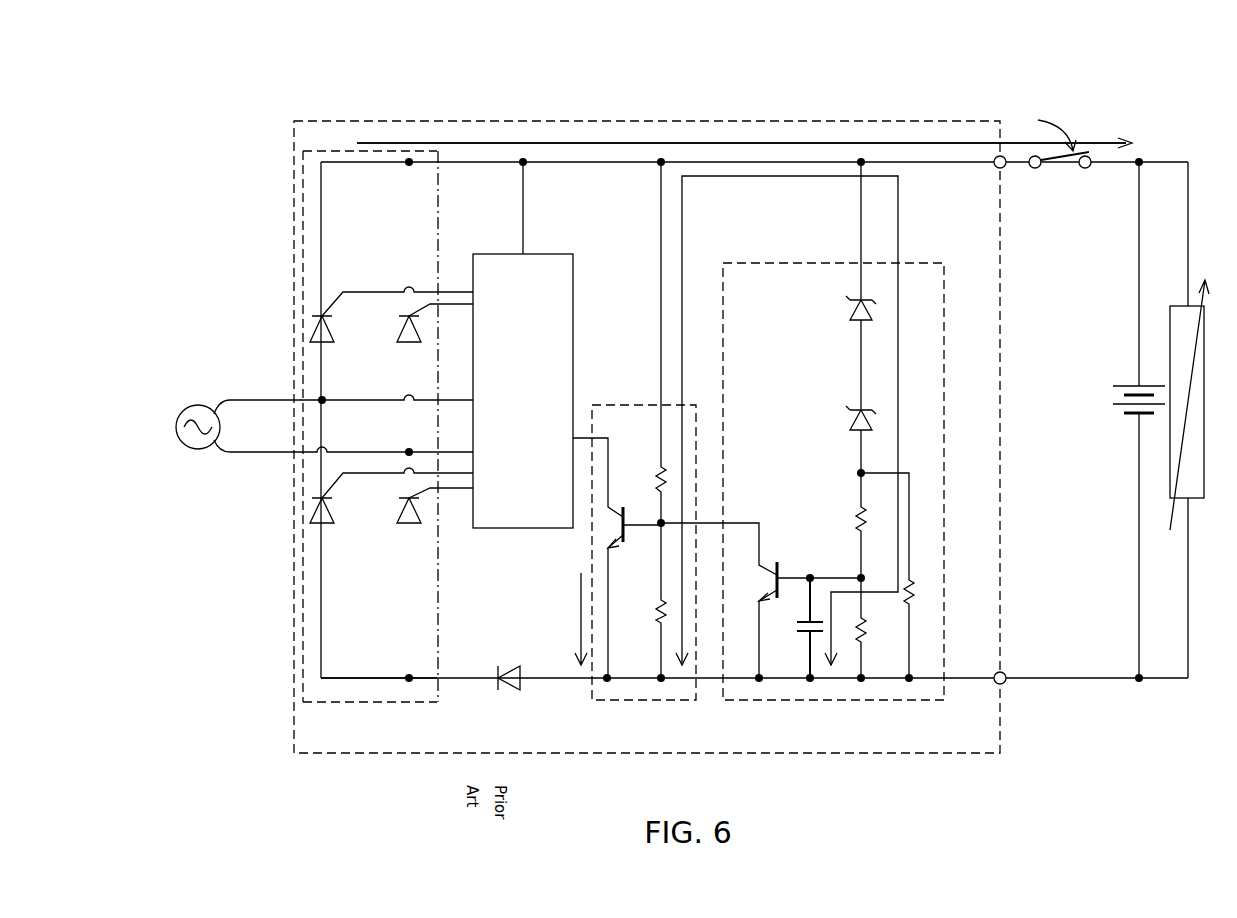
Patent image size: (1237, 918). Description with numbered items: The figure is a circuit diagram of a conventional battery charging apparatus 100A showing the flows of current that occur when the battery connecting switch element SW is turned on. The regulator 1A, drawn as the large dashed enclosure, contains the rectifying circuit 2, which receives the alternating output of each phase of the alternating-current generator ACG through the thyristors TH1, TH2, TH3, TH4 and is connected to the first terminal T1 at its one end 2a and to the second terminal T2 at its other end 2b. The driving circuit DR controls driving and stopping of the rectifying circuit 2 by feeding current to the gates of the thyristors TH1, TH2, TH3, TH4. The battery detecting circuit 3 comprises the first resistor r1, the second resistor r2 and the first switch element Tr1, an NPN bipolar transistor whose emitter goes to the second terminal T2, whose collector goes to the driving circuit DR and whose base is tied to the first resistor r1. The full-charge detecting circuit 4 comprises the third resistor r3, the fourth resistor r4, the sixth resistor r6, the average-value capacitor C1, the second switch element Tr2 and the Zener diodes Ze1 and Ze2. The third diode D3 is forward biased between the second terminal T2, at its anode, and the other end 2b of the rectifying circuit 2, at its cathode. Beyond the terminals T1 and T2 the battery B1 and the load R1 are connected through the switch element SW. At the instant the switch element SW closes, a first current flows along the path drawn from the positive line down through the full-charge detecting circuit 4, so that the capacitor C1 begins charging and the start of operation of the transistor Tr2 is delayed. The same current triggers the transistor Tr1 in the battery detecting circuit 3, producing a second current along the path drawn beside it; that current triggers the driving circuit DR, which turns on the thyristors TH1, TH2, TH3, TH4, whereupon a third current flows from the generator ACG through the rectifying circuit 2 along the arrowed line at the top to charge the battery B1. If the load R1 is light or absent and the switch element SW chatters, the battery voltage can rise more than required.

The regulator 1A is at (512, 121).
The rectifying circuit 2 is at (366, 143).
The one end of the rectifying circuit 2a is at (439, 151).
The other end of the rectifying circuit 2b is at (438, 690).
The alternating-current generator ACG is at (202, 404).
The thyristor TH1 is at (308, 329).
The thyristor TH2 is at (308, 512).
The thyristor TH3 is at (403, 333).
The thyristor TH4 is at (403, 517).
The driving circuit DR is at (553, 254).
The battery detecting circuit 3 is at (631, 405).
The first switch element Tr1 is at (620, 507).
The first resistor r1 is at (661, 465).
The second resistor r2 is at (659, 614).
The full-charge detecting circuit 4 is at (810, 263).
The second switch element Tr2 is at (775, 560).
The first Zener diode Ze1 is at (872, 311).
The first Zener diode Ze2 is at (872, 421).
The third resistor r3 is at (858, 521).
The fourth resistor r4 is at (866, 632).
The sixth resistor r6 is at (912, 595).
The average-value capacitor C1 is at (803, 636).
The third diode D3 is at (505, 664).
The first terminal T1 is at (1005, 168).
The second terminal T2 is at (1004, 684).
The switch element SW is at (1062, 166).
The battery B1 is at (1128, 384).
The load resistor R1 is at (1178, 306).
The battery charging apparatus 100A is at (666, 794).